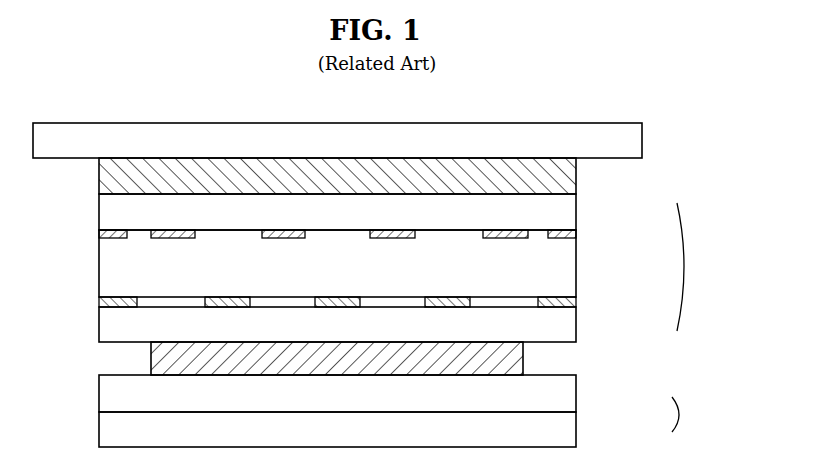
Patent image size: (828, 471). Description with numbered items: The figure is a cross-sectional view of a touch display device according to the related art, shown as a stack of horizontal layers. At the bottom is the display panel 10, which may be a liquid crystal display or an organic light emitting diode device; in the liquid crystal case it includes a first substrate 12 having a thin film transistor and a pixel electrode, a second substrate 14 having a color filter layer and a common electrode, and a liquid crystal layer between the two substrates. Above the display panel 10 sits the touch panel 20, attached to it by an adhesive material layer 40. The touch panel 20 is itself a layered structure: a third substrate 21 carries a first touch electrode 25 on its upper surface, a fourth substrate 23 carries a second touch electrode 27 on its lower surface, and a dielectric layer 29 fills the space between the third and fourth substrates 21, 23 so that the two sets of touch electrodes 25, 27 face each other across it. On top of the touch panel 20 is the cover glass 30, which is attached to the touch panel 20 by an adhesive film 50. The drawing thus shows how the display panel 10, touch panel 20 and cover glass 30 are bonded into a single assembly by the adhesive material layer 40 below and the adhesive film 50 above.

The display panel 10 is at (695, 414).
The first substrate 12 is at (568, 432).
The second substrate 14 is at (568, 395).
The touch panel 20 is at (699, 267).
The third substrate 21 is at (568, 328).
The fourth substrate 23 is at (568, 207).
The first touch electrode 25 is at (576, 302).
The second touch electrode 27 is at (576, 233).
The dielectric layer 29 is at (568, 263).
The cover glass 30 is at (633, 138).
The adhesive material layer 40 is at (523, 358).
The adhesive film 50 is at (575, 173).